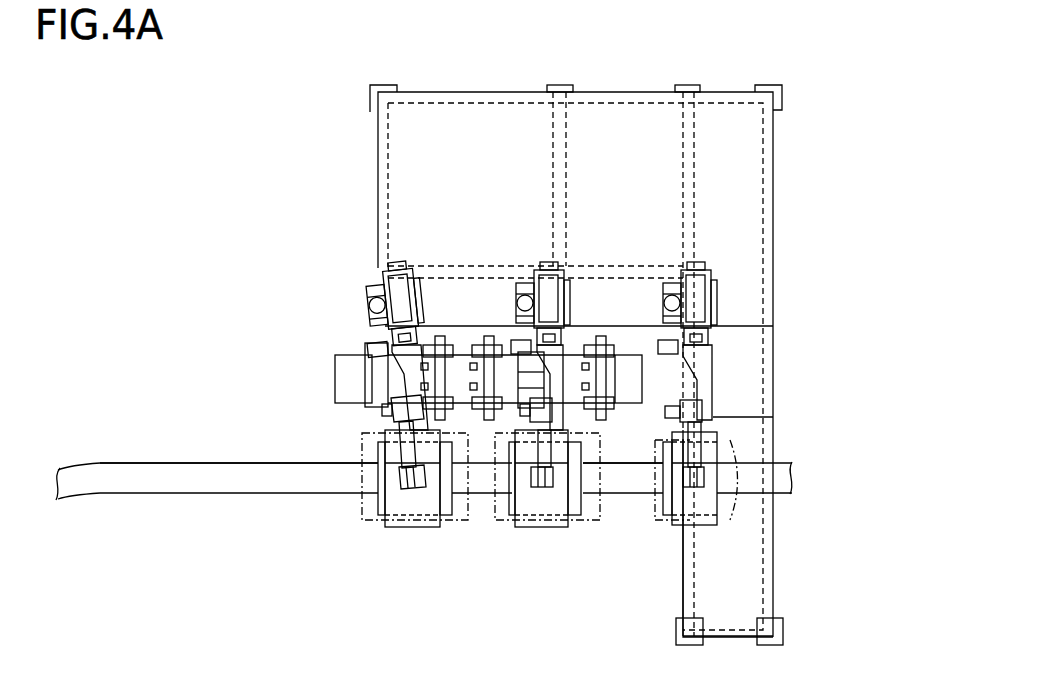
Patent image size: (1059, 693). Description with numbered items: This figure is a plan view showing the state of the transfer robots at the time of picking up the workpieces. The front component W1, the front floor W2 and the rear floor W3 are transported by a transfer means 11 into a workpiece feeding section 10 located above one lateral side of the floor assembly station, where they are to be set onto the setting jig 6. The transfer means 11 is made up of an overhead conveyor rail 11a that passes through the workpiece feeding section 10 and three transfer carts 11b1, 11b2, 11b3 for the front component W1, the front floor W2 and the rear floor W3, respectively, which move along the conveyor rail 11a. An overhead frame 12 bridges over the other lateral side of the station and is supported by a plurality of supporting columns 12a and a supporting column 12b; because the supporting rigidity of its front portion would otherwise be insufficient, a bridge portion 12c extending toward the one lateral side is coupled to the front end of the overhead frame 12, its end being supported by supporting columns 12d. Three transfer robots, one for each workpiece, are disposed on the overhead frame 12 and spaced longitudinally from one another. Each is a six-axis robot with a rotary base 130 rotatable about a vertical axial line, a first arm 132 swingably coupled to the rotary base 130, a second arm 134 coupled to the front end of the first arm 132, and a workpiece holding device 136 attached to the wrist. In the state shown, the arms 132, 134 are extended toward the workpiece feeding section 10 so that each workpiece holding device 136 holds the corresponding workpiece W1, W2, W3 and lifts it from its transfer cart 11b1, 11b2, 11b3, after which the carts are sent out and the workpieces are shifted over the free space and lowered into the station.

The overhead frame 12 is at (402, 157).
The supporting columns 12a is at (370, 94).
The supporting column 12b is at (440, 264).
The bridge portion 12c is at (752, 567).
The supporting columns 12d is at (678, 627).
The setting jig 6 is at (345, 372).
The rotary base 130 is at (426, 275).
The first arm 132 is at (708, 392).
The second arm 134 is at (713, 435).
The workpiece holding device 136 is at (428, 527).
The workpiece feeding section 10 is at (628, 492).
The transfer means 11 is at (297, 520).
The overhead conveyor rail 11a is at (213, 470).
The transfer cart 11b1 is at (667, 487).
The transfer cart 11b2 is at (513, 493).
The transfer cart 11b3 is at (383, 497).
The front component W1 is at (658, 525).
The front floor W2 is at (503, 527).
The rear floor W3 is at (369, 527).